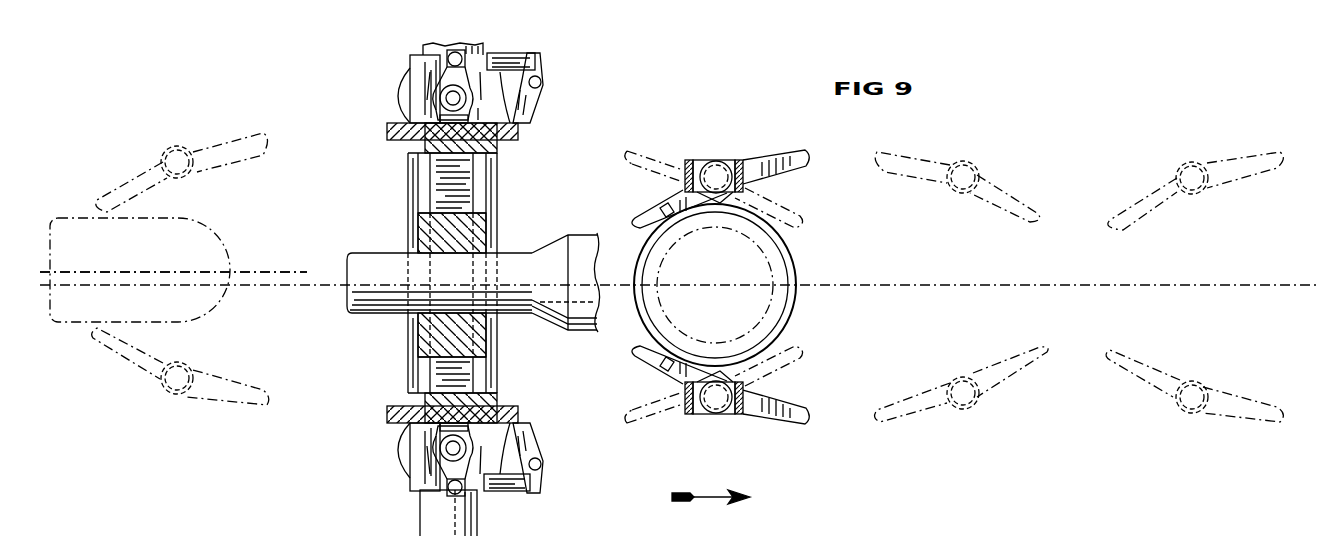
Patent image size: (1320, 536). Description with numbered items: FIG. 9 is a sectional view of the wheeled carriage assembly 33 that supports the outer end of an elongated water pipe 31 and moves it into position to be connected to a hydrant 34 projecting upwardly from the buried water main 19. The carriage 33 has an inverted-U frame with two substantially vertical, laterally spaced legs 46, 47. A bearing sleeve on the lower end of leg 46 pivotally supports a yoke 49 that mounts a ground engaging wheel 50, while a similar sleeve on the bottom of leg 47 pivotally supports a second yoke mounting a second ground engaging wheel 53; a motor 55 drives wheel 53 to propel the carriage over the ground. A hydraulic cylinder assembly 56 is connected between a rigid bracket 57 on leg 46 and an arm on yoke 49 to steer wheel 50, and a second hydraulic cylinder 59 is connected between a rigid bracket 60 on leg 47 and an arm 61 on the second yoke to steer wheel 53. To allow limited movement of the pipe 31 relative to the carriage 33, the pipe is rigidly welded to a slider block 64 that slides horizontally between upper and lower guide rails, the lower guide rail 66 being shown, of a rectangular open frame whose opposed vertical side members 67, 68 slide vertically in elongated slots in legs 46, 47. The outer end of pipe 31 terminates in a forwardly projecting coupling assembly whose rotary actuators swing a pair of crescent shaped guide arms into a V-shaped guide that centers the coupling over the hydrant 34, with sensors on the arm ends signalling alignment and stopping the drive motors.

The water main 19 is at (256, 282).
The water pipe 31 is at (377, 305).
The wheeled carriage assembly 33 is at (392, 188).
The hydrant 34 is at (795, 273).
The leg 46 is at (510, 141).
The leg 47 is at (388, 411).
The yoke 49 is at (410, 58).
The ground engaging wheel 50 is at (395, 102).
The second ground engaging wheel 53 is at (393, 457).
The motor 55 is at (462, 513).
The hydraulic cylinder assembly 56 is at (508, 46).
The rigid bracket 57 is at (532, 110).
The second hydraulic cylinder 59 is at (510, 491).
The rigid bracket 60 is at (533, 446).
The arm 61 is at (442, 467).
The slider block 64 is at (473, 238).
The lower guide rail 66 is at (488, 374).
The side member 67 is at (470, 148).
The side member 68 is at (503, 397).